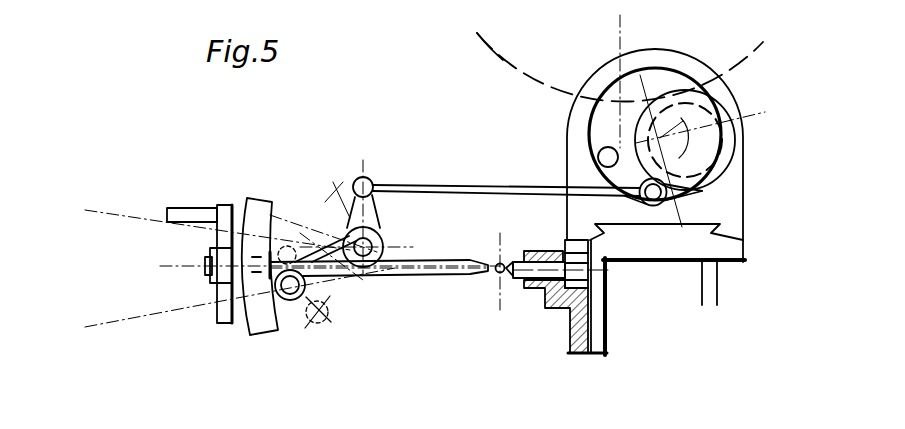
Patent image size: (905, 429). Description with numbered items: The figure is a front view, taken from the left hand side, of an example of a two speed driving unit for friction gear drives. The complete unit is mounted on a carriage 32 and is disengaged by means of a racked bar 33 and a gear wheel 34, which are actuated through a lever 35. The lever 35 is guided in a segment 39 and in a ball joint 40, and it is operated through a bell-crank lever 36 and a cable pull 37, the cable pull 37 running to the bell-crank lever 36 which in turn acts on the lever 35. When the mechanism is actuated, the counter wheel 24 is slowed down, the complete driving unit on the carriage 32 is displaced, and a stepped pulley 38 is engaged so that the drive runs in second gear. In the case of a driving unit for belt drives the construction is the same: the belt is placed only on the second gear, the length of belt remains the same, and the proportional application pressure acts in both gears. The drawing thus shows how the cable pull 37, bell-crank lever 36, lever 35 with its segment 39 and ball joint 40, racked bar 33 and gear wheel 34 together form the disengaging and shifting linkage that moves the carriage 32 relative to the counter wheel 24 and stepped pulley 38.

The counter wheel 24 is at (505, 62).
The carriage 32 is at (662, 242).
The racked bar 33 is at (582, 242).
The gear wheel 34 is at (582, 289).
The lever 35 is at (396, 274).
The bell-crank lever 36 is at (373, 198).
The cable pull 37 is at (430, 184).
The stepped pulley 38 is at (690, 197).
The segment 39 is at (263, 323).
The ball joint 40 is at (499, 286).